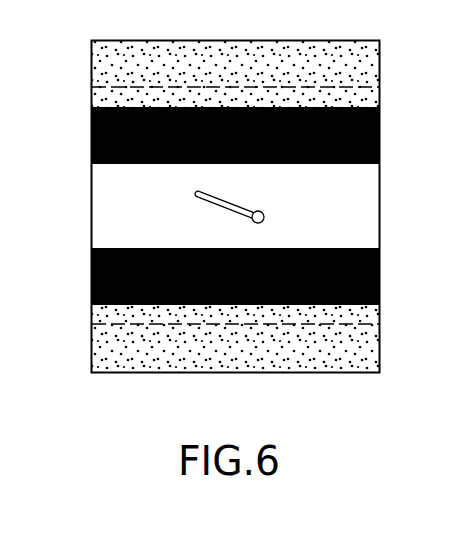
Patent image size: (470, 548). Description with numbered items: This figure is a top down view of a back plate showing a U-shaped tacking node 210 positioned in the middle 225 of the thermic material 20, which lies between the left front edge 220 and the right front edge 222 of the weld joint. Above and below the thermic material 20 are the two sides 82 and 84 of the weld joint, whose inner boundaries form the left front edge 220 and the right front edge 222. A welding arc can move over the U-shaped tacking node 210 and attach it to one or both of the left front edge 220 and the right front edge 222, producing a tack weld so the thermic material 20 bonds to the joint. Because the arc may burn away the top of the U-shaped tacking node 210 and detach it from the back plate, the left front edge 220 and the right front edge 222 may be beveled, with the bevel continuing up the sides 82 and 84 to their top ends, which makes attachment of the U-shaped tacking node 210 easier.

The thermic material 20 is at (108, 186).
The side of the weld joint 82 is at (379, 135).
The side of the weld joint 84 is at (379, 276).
The U-shaped tacking node 210 is at (207, 202).
The left front edge of the weld joint 220 is at (323, 165).
The right front edge of the weld joint 222 is at (157, 248).
The middle of the thermic material 225 is at (280, 212).